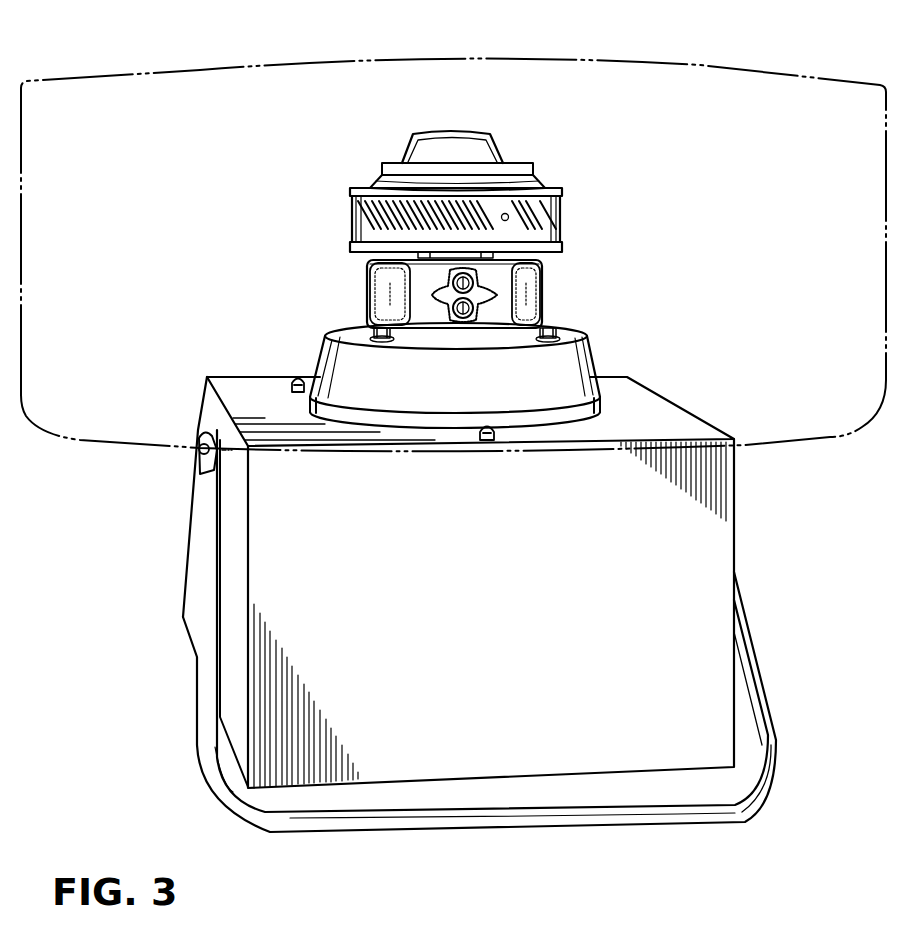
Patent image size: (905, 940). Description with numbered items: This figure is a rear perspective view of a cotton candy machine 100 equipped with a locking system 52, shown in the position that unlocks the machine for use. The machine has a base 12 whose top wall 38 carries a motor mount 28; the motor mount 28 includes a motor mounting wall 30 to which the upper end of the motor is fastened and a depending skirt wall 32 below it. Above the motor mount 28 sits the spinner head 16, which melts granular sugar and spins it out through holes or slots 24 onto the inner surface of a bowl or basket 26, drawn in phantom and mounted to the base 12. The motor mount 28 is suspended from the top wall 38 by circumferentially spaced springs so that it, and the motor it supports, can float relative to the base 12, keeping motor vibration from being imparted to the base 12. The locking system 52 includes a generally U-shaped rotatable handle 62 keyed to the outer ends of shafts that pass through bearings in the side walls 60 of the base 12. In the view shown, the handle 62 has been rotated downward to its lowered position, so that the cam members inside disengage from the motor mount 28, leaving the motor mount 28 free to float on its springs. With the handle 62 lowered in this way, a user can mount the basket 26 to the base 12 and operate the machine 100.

The cotton candy machine 100 is at (811, 61).
The basket 26 is at (830, 444).
The spinner head 16 is at (537, 172).
The slots 24 is at (562, 218).
The motor mounting wall 30 is at (553, 333).
The motor mount 28 is at (591, 345).
The depending skirt wall 32 is at (333, 365).
The top wall 38 is at (265, 388).
The base 12 is at (738, 719).
The locking system 52 is at (761, 660).
The side wall 60 is at (216, 405).
The handle 62 is at (778, 752).